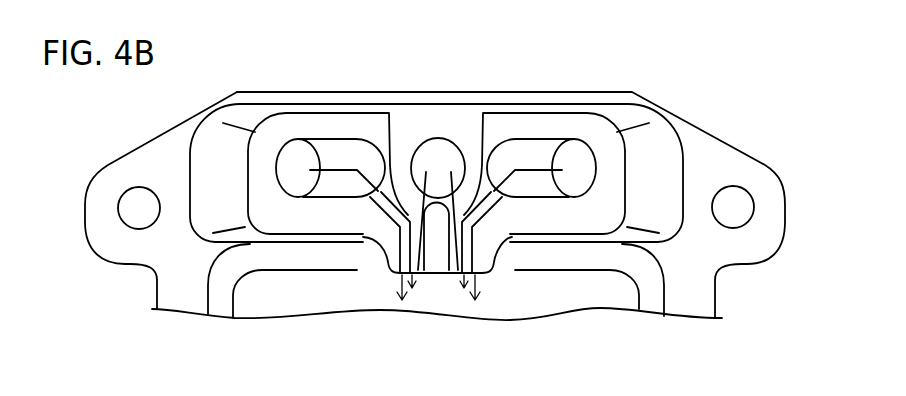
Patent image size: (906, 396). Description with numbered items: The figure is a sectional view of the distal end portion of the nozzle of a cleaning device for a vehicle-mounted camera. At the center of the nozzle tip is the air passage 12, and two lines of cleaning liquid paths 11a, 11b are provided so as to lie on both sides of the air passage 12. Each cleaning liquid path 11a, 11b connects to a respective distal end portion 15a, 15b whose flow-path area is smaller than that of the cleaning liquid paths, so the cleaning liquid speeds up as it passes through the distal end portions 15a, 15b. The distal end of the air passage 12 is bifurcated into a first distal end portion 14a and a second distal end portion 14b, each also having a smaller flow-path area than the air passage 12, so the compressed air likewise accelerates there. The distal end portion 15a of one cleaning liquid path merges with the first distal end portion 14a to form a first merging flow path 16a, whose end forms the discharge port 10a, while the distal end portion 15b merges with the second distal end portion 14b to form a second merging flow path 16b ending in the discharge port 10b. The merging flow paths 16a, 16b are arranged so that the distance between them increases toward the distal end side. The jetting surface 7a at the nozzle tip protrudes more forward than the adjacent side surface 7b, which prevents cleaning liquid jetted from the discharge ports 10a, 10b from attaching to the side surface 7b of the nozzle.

The jetting surface 7a is at (438, 275).
The side surface 7b is at (215, 243).
The discharge port 10a is at (412, 282).
The discharge port 10b is at (478, 282).
The cleaning liquid path 11a is at (300, 150).
The cleaning liquid path 11b is at (574, 150).
The air passage 12 is at (438, 148).
The first distal end portion 14a is at (389, 113).
The second distal end portion 14b is at (483, 113).
The distal end portion 15a is at (395, 226).
The distal end portion 15b is at (480, 228).
The first merging flow path 16a is at (432, 275).
The second merging flow path 16b is at (450, 275).